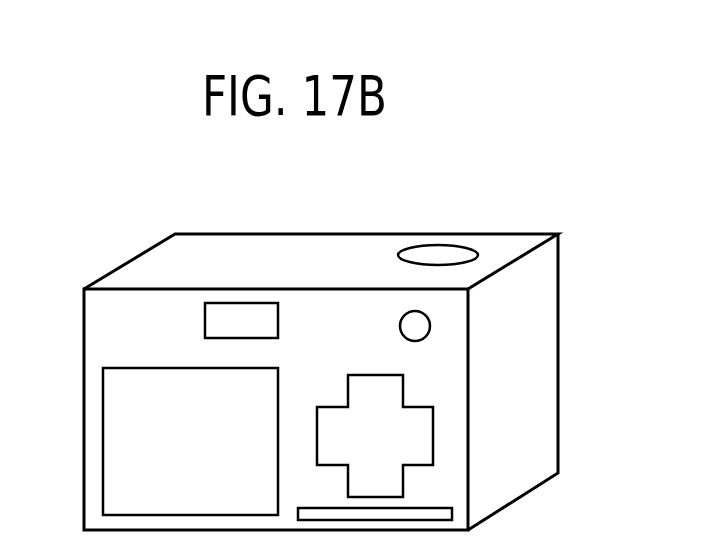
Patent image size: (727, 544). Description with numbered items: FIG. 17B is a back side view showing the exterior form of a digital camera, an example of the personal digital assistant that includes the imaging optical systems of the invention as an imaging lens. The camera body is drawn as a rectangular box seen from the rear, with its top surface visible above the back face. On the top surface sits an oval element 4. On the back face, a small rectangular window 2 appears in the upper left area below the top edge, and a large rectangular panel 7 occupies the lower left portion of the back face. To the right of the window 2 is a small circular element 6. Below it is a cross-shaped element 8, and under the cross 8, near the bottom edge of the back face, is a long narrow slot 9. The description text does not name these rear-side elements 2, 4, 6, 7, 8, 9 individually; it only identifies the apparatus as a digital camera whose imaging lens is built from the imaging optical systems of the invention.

The display window 2 is at (213, 313).
The power switch 4 is at (436, 248).
The button 6 is at (403, 323).
The display screen 7 is at (117, 454).
The cross key 8 is at (369, 377).
The slot 9 is at (318, 510).